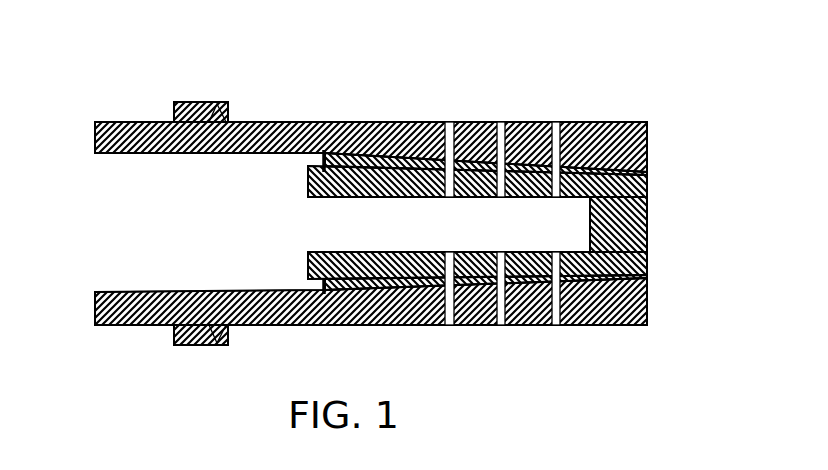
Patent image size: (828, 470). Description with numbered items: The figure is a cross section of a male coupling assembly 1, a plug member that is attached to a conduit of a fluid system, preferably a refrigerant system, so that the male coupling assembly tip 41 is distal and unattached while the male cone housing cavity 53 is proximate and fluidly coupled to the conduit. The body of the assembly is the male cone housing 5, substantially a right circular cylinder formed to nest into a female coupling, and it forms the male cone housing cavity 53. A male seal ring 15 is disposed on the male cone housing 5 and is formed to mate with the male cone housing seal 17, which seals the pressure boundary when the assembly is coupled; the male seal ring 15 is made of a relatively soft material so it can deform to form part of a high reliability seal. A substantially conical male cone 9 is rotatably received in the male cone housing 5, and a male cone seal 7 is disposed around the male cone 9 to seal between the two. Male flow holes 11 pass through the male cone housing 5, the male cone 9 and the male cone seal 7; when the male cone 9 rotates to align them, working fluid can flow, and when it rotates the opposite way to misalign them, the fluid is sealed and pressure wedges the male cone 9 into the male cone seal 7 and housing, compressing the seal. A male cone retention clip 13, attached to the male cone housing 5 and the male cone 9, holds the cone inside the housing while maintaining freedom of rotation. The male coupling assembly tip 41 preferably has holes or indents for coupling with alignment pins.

The male coupling assembly 1 is at (435, 42).
The male cone housing 5 is at (600, 122).
The male cone seal 7 is at (645, 180).
The male cone 9 is at (645, 257).
The male flow holes 11 is at (447, 197).
The male cone retention clip 13 is at (324, 294).
The male seal ring 15 is at (195, 101).
The male cone housing seal 17 is at (228, 116).
The male coupling assembly tip 41 is at (645, 218).
The male cone housing cavity 53 is at (137, 218).